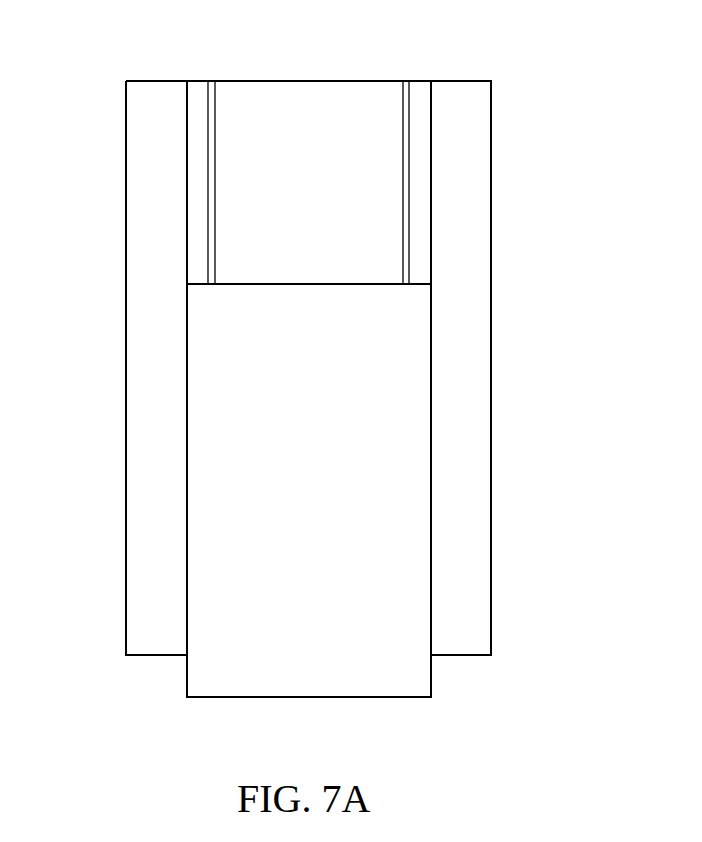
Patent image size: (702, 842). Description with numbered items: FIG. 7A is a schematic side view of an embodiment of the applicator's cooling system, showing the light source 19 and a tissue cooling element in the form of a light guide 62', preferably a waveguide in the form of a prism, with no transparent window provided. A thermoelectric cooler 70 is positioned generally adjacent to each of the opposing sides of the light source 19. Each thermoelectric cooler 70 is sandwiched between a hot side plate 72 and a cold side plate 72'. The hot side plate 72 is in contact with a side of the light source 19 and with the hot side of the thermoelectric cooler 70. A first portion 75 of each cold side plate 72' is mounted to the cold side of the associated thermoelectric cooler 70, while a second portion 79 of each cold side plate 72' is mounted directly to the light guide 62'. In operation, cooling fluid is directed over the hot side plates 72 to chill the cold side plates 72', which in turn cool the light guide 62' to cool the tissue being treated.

The light source 19 is at (313, 102).
The thermoelectric cooler 70 is at (200, 118).
The hot side plate 72 is at (312, 182).
The first portion of cold side plate 75 is at (185, 183).
The cold side plate 72' is at (308, 368).
The second portion of cold side plate 79 is at (187, 445).
The light guide 62' is at (374, 490).